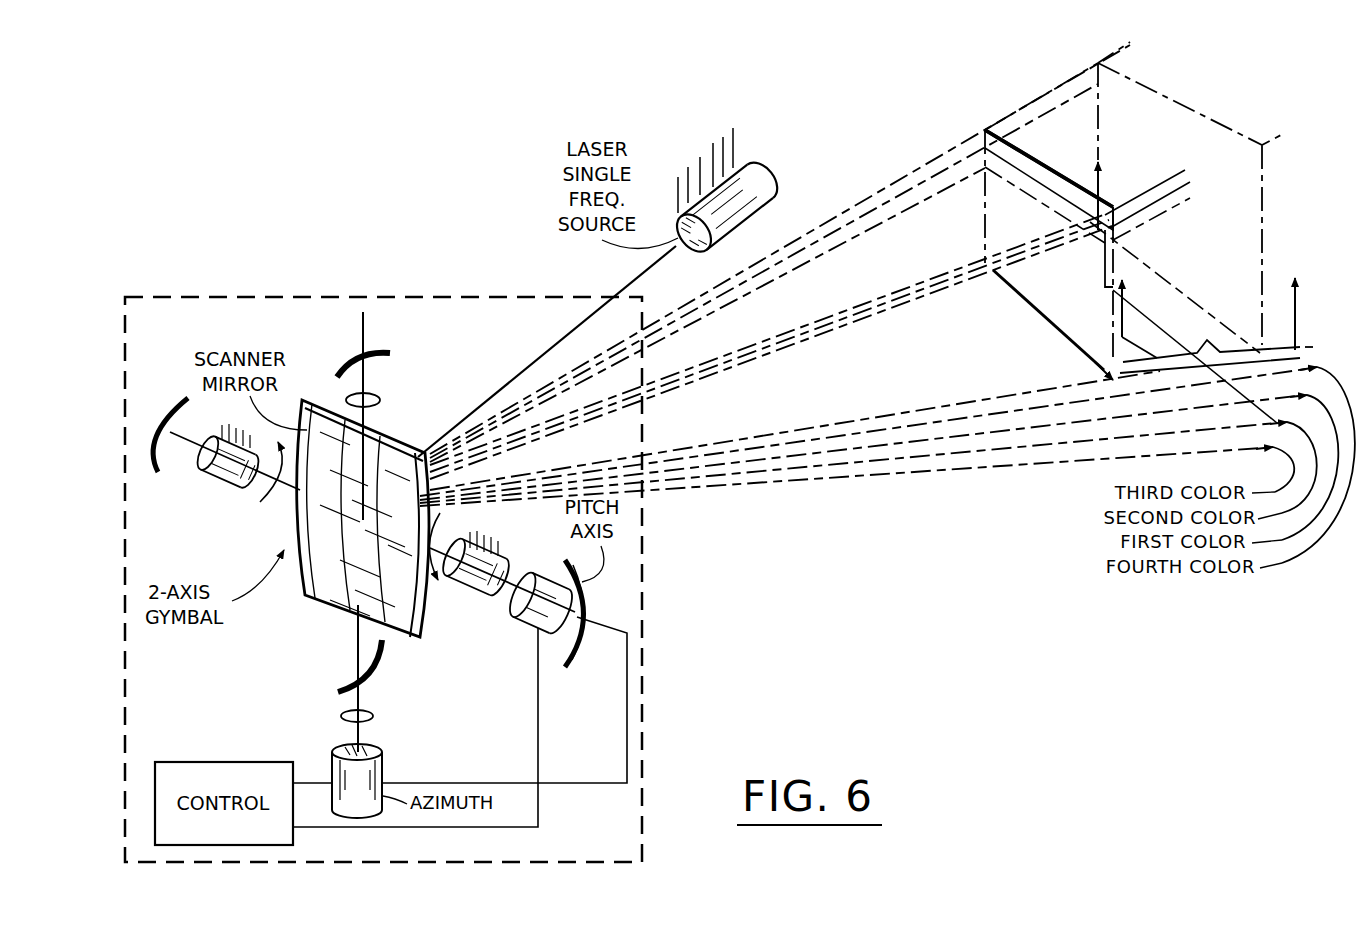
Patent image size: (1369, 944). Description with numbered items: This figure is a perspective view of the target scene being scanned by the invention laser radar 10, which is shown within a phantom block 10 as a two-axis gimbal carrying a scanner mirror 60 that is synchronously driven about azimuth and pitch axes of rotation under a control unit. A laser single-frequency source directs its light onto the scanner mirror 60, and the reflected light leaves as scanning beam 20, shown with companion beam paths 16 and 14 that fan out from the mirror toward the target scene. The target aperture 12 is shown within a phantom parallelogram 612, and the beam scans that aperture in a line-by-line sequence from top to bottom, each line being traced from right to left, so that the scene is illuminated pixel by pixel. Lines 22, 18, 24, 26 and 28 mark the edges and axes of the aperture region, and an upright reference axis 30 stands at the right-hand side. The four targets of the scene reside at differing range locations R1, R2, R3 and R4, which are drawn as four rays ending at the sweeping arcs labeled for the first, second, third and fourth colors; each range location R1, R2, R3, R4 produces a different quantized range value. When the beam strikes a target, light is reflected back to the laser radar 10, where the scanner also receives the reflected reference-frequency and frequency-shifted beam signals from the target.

The laser radar 10 is at (182, 527).
The scanner mirror 60 is at (347, 468).
The scanning beam 20 is at (725, 303).
The scanning beam component 16 is at (812, 246).
The scanning beam component 14 is at (833, 322).
The phantom parallelogram 612 is at (1070, 177).
The target normal axis 22 is at (1100, 178).
The beam path 18 is at (1160, 212).
The aperture edge 24 is at (1103, 248).
The aperture axis 26 is at (1125, 285).
The target surface strip 28 is at (1210, 346).
The reference axis 30 is at (1296, 330).
The target aperture 12 is at (987, 242).
The range location R1 is at (1255, 447).
The range location R2 is at (1244, 428).
The range location R3 is at (1205, 410).
The range location R4 is at (1178, 390).